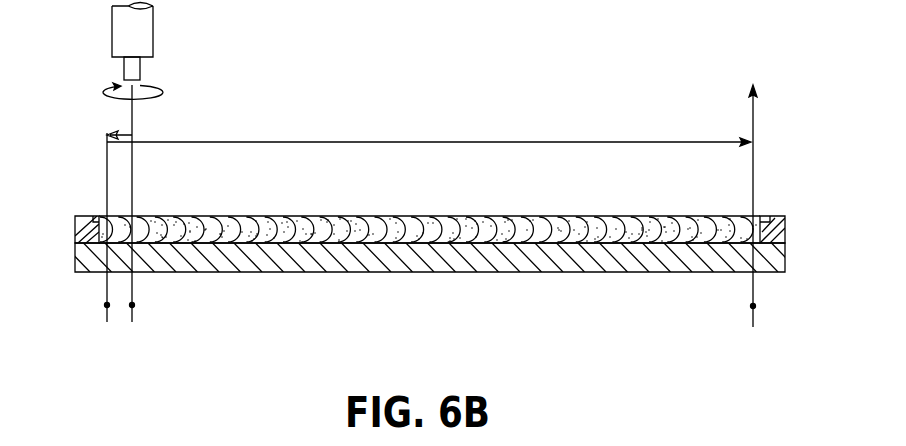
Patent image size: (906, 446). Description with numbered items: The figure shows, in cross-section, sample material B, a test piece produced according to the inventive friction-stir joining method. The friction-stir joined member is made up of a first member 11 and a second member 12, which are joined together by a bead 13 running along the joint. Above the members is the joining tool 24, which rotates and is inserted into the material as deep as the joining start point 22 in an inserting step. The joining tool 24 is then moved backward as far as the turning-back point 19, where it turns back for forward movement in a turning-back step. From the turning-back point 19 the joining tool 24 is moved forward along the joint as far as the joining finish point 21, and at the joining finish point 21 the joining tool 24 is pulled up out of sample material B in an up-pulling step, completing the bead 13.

The first member 11 is at (415, 266).
The second member 12 is at (82, 216).
The bead 13 is at (432, 218).
The turning-back point 19 is at (107, 305).
The joining finish point 21 is at (753, 306).
The joining start point 22 is at (132, 305).
The joining tool 24 is at (157, 23).
The sample material B is at (562, 303).